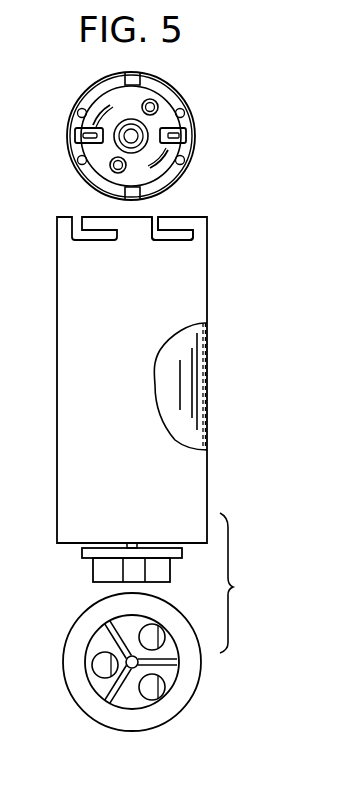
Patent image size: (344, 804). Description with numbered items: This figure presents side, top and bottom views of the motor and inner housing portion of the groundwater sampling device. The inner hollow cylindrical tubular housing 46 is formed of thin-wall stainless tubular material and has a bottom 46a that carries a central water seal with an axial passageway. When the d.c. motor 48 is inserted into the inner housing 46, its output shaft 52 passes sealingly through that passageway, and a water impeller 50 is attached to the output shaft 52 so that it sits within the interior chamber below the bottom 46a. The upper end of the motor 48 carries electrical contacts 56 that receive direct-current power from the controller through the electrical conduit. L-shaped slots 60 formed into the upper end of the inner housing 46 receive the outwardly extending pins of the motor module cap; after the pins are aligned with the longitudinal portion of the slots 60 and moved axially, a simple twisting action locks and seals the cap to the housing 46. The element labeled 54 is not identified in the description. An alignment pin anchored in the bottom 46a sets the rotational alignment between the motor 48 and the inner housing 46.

The inner hollow cylindrical tubular housing 46 is at (203, 293).
The bottom 46a is at (72, 545).
The d.c. motor 48 is at (167, 177).
The water impeller 50 is at (172, 567).
The output shaft 52 is at (127, 543).
The outer rim 54 is at (182, 78).
The electrical contact 56 is at (186, 137).
The L-shaped slot 60 is at (185, 247).